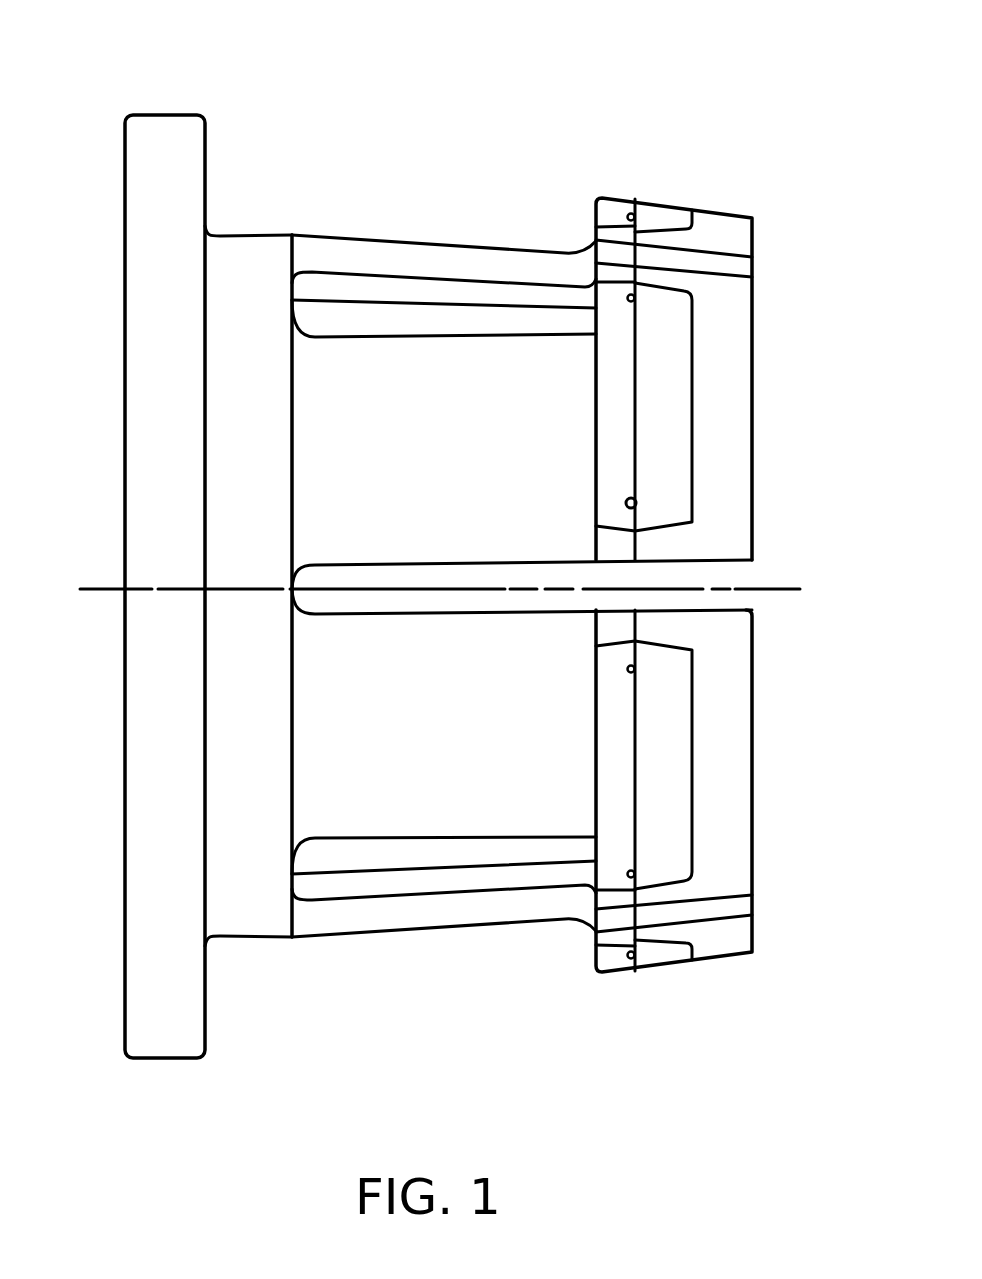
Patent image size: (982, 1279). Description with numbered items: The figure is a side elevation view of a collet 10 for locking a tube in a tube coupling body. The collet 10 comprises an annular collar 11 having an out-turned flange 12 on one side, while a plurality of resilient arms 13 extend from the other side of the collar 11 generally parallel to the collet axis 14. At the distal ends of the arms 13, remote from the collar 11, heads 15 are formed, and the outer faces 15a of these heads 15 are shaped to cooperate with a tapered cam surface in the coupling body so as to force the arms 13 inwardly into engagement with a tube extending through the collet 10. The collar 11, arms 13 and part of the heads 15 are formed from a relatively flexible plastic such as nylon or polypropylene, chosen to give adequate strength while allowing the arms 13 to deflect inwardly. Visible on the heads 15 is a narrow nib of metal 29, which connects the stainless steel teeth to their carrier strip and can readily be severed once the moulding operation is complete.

The collet 10 is at (722, 70).
The annular collar 11 is at (242, 253).
The out-turned flange 12 is at (147, 178).
The resilient arms 13 is at (423, 265).
The collet axis 14 is at (88, 589).
The heads 15 is at (757, 328).
The outer faces 15a is at (723, 208).
The nibs of metal 29 is at (624, 503).